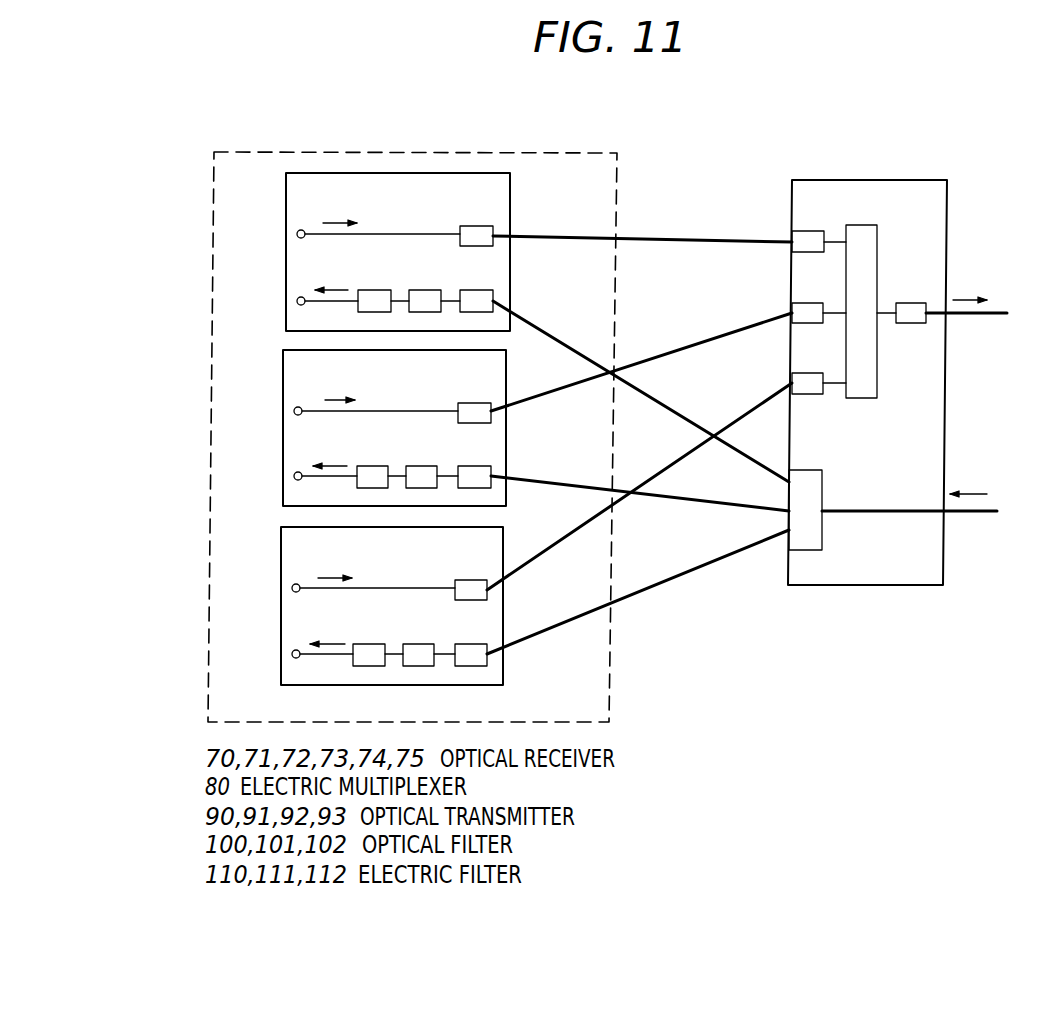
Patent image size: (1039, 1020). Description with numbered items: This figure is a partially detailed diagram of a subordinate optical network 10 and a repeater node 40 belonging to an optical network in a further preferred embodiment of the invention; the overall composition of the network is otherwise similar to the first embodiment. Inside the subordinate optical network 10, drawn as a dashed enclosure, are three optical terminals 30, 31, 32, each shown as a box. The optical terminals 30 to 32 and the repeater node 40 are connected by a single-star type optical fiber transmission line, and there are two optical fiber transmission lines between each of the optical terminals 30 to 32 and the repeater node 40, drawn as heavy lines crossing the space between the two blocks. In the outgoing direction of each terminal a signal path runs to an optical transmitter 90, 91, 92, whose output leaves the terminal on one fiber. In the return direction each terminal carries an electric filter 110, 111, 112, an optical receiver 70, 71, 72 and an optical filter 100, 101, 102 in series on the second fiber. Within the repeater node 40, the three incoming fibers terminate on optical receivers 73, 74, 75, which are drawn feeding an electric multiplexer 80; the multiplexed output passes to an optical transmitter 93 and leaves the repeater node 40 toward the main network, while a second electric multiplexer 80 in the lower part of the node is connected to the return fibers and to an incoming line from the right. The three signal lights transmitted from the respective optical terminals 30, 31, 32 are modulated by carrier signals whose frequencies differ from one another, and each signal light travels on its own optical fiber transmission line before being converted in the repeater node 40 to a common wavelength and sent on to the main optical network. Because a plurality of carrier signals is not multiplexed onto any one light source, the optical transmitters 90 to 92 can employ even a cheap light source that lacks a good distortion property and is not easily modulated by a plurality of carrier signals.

The subordinate optical network 10 is at (377, 152).
The optical terminal 30 is at (427, 327).
The optical terminal 31 is at (428, 412).
The optical terminal 32 is at (427, 534).
The repeater node 40 is at (897, 346).
The optical receiver 70 is at (423, 290).
The optical receiver 71 is at (419, 466).
The optical receiver 72 is at (417, 644).
The optical receiver 73 is at (805, 231).
The optical receiver 74 is at (803, 303).
The optical receiver 75 is at (800, 373).
The electric multiplexer 80 is at (858, 225).
The optical transmitter 90 is at (470, 226).
The optical transmitter 91 is at (470, 403).
The optical transmitter 92 is at (468, 580).
The optical transmitter 93 is at (910, 303).
The optical filter 100 is at (476, 290).
The optical filter 101 is at (473, 466).
The optical filter 102 is at (470, 644).
The electric filter 110 is at (373, 290).
The electric filter 111 is at (373, 466).
The electric filter 112 is at (371, 644).